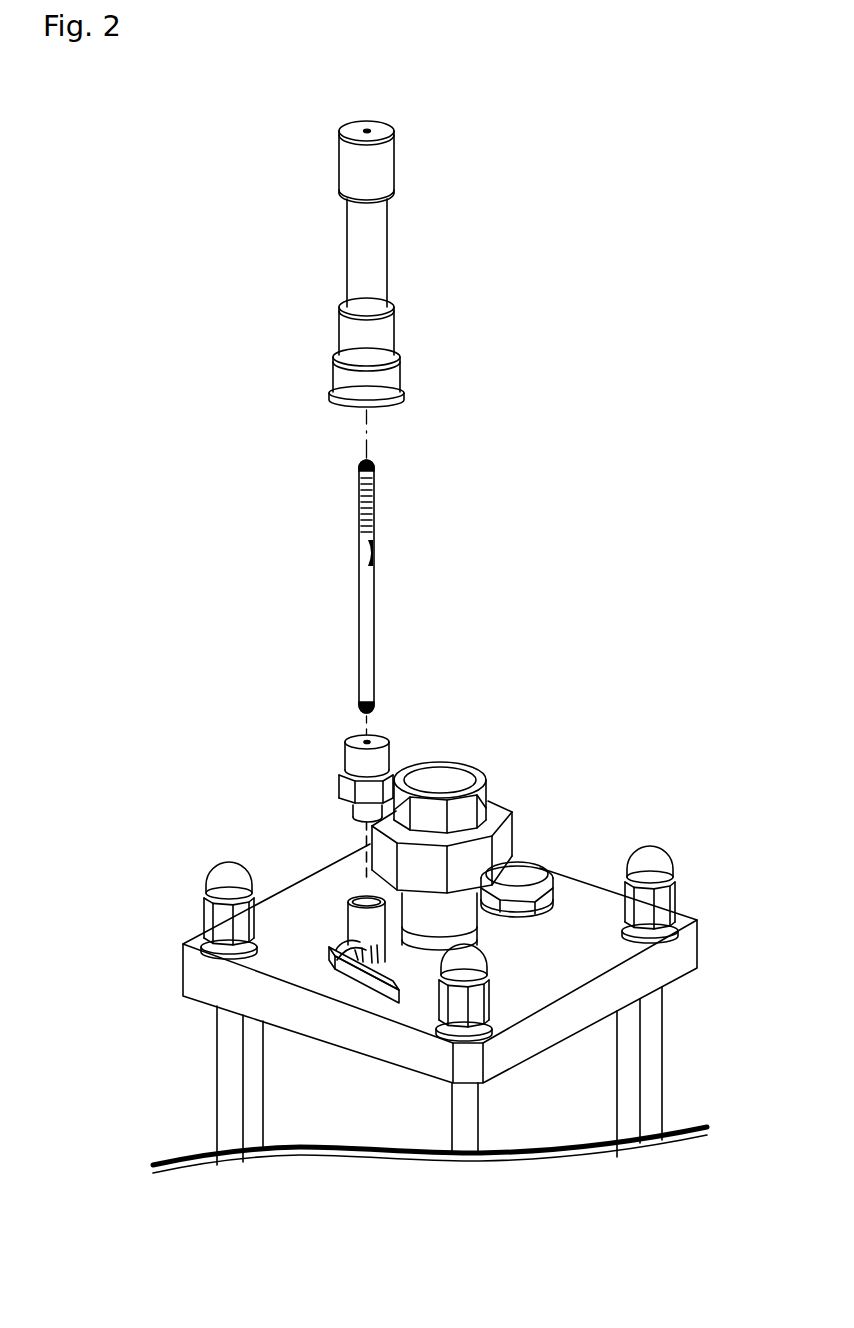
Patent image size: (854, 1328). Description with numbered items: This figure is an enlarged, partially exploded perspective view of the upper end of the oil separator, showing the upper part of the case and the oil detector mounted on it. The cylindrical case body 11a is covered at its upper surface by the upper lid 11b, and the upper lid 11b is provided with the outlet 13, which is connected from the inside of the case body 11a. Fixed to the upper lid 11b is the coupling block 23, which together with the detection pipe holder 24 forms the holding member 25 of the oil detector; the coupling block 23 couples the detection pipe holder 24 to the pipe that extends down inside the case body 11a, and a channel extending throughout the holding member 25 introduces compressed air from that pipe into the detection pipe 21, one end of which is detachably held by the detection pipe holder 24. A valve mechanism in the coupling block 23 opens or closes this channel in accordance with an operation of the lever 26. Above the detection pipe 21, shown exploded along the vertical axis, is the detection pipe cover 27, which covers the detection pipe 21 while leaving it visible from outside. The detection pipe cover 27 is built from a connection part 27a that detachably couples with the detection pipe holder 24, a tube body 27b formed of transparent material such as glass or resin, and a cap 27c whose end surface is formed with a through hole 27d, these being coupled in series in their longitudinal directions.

The detection pipe cover 27 is at (517, 150).
The connection part 27a is at (390, 342).
The tube body 27b is at (374, 257).
The cap 27c is at (378, 175).
The through hole 27d is at (363, 129).
The detection pipe 21 is at (364, 623).
The holding member 25 is at (222, 715).
The detection pipe holder 24 is at (343, 773).
The coupling block 23 is at (347, 923).
The outlet 13 is at (443, 774).
The lever 26 is at (362, 975).
The case body 11a is at (598, 1084).
The upper lid 11b is at (576, 903).